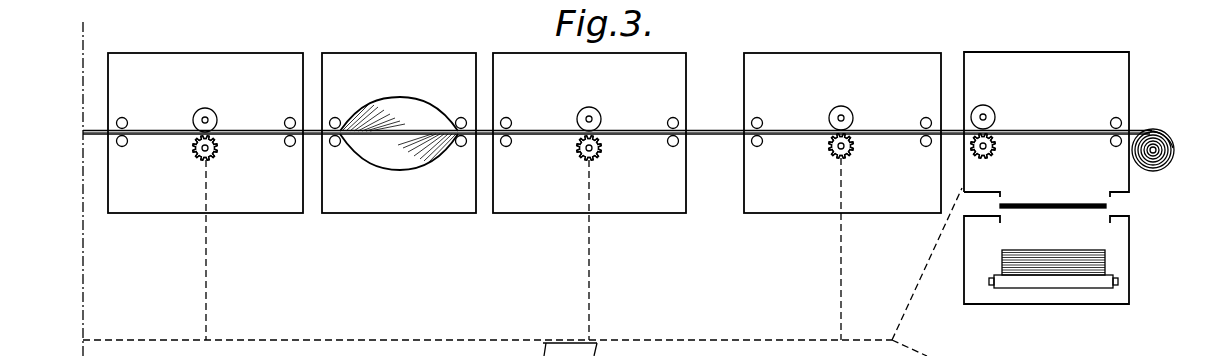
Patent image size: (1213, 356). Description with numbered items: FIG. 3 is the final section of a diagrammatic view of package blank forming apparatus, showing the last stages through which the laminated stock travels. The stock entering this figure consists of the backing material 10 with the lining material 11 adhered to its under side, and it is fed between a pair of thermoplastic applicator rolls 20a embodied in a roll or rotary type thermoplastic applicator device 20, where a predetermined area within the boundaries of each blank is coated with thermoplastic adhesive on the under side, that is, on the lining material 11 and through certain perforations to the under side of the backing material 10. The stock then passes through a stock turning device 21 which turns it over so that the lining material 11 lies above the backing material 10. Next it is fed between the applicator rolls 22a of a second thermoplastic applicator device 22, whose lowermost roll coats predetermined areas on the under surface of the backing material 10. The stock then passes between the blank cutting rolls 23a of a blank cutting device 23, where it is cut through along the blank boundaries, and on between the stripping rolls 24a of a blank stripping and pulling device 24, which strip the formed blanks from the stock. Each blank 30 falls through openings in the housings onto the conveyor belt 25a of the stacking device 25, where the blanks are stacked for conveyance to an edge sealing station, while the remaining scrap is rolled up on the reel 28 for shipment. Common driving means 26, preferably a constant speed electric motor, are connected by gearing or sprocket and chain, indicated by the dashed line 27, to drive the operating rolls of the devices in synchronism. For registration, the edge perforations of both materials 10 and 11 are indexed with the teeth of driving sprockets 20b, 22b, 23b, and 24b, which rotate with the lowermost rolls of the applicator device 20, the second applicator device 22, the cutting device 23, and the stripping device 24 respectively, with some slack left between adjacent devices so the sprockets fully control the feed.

The backing material 10 is at (92, 131).
The lining material stock 11 is at (93, 136).
The thermoplastic applicator device 20 is at (140, 214).
The thermoplastic applicator rolls 20a is at (218, 118).
The driving sprockets 20b is at (198, 160).
The stock turning device 21 is at (407, 214).
The second thermoplastic applicator device 22 is at (542, 214).
The applicator rolls 22a is at (601, 119).
The driving sprockets 22b is at (584, 160).
The blank cutting device 23 is at (792, 214).
The blank cutting rolls 23a is at (853, 114).
The driving sprockets 23b is at (832, 156).
The blank stripping and pulling device 24 is at (1130, 188).
The stripping rolls 24a is at (996, 117).
The driving sprockets 24b is at (993, 158).
The stacking device 25 is at (1130, 280).
The conveyor belt 25a is at (1062, 290).
The common driving means 26 is at (1114, 349).
The dashed line drive connection 27 is at (736, 338).
The scrap reel 28 is at (1156, 131).
The blank 30 is at (1059, 205).